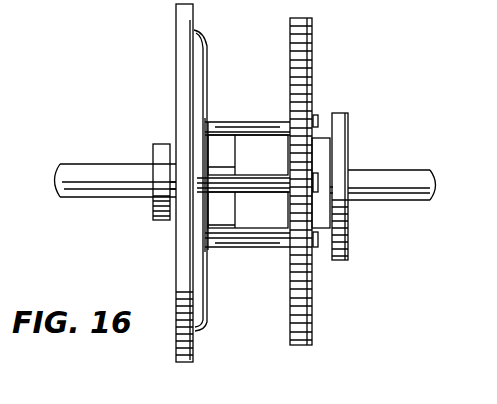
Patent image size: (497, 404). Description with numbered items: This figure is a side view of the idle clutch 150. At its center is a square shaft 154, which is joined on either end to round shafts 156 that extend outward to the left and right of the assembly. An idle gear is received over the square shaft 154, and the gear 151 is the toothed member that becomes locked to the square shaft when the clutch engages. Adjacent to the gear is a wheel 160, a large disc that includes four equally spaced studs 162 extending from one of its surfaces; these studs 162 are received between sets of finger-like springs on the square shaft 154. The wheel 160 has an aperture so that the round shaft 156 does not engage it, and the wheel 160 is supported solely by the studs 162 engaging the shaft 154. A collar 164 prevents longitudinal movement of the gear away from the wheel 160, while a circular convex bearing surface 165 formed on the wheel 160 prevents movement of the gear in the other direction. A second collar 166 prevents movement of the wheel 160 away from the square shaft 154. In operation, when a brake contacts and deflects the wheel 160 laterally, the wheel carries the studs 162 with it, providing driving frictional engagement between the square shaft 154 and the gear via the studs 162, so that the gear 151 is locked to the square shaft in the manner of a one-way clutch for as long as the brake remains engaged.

The clutch 150 is at (136, 256).
The gear 151 is at (312, 332).
The square shaft 154 is at (324, 138).
The round shafts 156 is at (81, 170).
The wheel 160 is at (188, 22).
The studs 162 is at (254, 122).
The collar 164 is at (345, 113).
The circular convex bearing surface 165 is at (207, 300).
The collar 166 is at (153, 158).